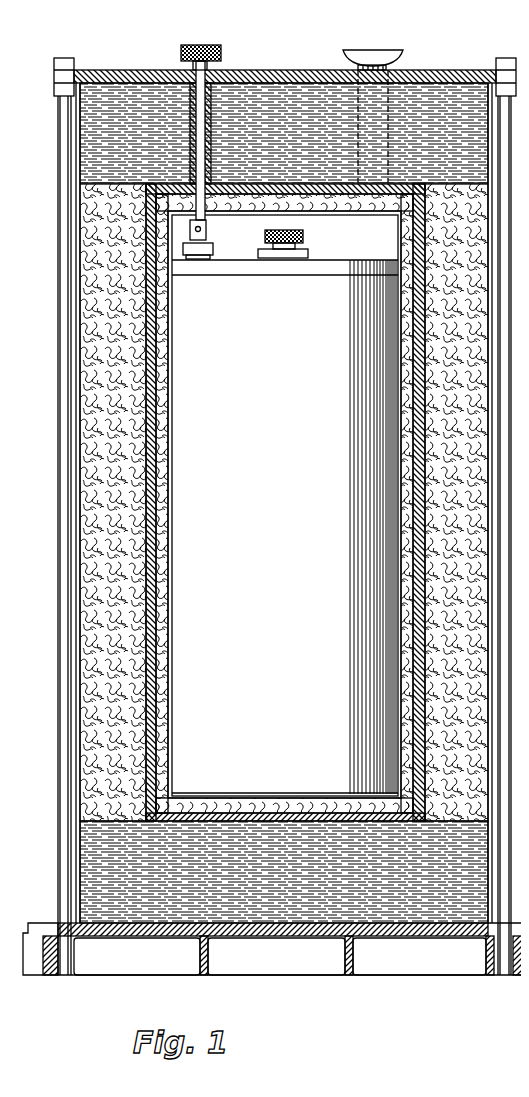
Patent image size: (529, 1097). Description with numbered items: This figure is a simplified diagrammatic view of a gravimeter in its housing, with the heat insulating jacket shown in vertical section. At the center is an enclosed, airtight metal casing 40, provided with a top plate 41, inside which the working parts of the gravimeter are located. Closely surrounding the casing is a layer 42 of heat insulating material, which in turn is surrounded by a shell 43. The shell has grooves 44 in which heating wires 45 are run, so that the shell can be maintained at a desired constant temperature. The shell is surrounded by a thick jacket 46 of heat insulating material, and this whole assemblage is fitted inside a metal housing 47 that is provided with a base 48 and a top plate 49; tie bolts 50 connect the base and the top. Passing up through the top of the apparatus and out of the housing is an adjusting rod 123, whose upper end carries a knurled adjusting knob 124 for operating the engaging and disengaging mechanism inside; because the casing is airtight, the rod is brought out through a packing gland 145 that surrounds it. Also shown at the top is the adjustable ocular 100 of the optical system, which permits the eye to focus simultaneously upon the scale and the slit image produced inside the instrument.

The tie bolts 50 is at (58, 47).
The metal housing 47 is at (62, 703).
The top plate 49 is at (128, 62).
The heating wires 45 is at (136, 393).
The shell 43 is at (138, 412).
The layer of heat insulating material 42 is at (147, 372).
The grooves 44 is at (138, 473).
The metal casing 40 is at (296, 275).
The top plate 41 is at (224, 250).
The packing gland 145 is at (202, 103).
The adjusting rod 123 is at (175, 50).
The knurled adjusting knob 124 is at (206, 37).
The adjustable ocular 100 is at (392, 40).
The jacket of heat insulating material 46 is at (80, 630).
The base 48 is at (105, 962).